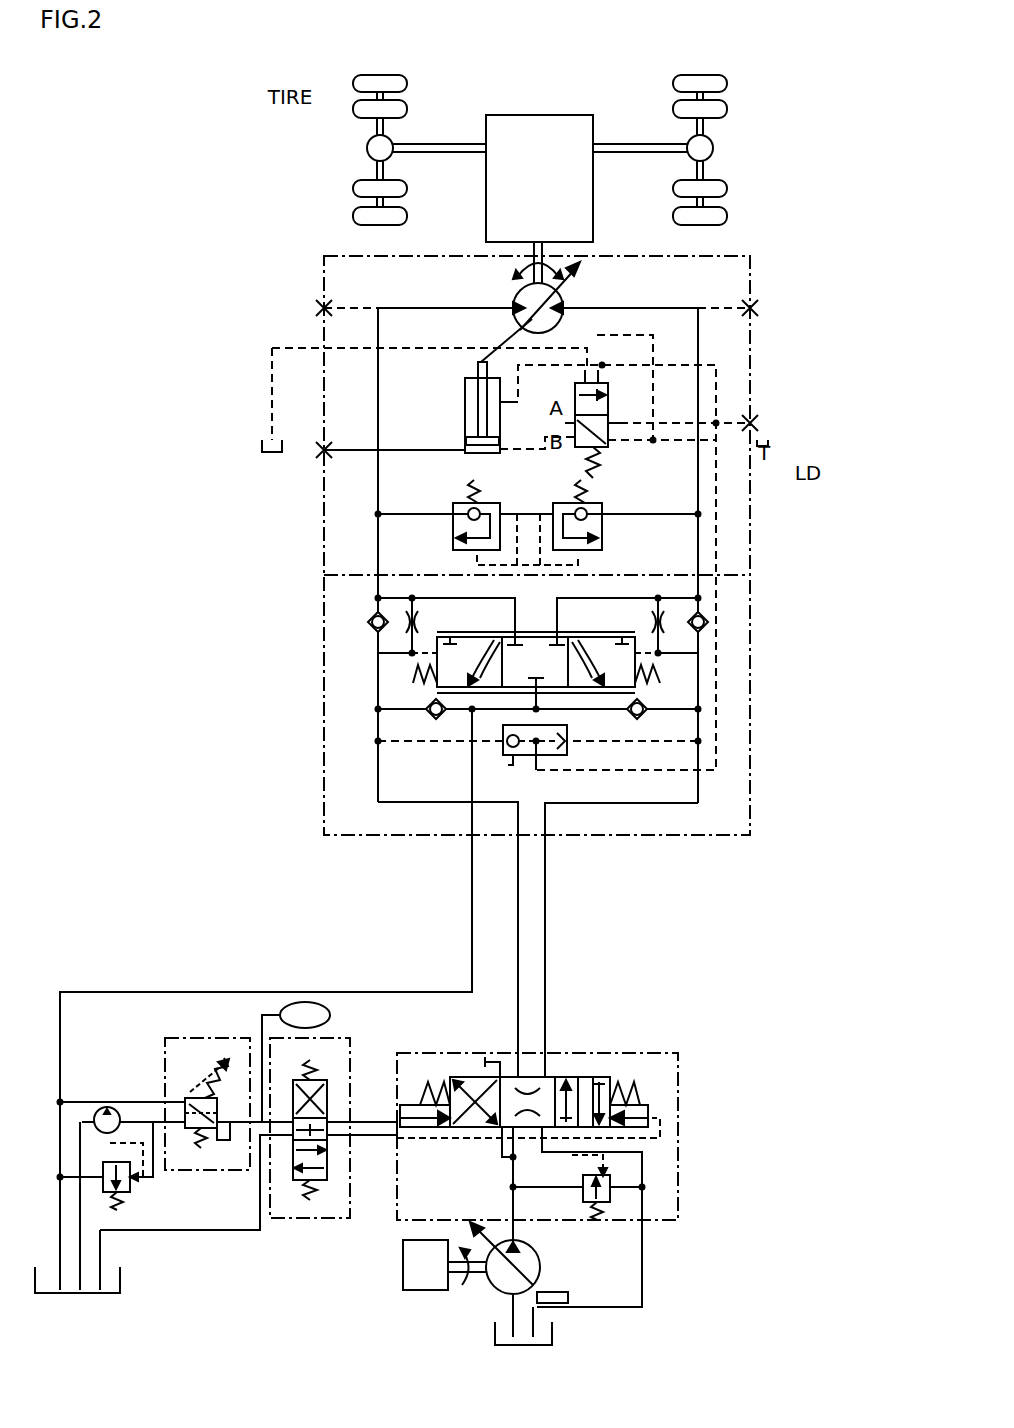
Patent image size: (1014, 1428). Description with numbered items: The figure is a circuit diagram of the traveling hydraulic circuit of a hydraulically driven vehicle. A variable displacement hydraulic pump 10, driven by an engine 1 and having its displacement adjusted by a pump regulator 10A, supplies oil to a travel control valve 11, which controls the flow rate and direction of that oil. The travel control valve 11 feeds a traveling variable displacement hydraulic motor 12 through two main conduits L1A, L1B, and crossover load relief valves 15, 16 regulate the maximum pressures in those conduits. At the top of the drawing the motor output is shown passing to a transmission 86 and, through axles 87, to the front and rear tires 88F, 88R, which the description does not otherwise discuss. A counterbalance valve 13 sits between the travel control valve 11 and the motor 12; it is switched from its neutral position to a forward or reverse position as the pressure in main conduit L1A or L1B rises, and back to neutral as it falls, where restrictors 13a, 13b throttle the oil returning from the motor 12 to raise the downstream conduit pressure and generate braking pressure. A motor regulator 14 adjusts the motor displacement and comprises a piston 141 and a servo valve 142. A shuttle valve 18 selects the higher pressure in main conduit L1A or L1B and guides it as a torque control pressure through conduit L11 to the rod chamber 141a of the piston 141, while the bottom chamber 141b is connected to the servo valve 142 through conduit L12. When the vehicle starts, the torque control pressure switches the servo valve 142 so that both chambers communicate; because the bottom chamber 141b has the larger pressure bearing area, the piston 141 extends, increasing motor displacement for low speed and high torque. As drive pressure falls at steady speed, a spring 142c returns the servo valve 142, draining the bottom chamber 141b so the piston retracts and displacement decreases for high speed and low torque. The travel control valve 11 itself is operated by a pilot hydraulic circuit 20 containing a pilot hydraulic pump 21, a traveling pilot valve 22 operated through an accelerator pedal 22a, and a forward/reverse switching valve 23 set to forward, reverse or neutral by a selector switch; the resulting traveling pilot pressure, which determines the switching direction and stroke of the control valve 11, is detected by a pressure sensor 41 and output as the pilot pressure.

The front tire 88F is at (385, 78).
The rear tire 88R is at (700, 78).
The axle 87 is at (430, 143).
The transmission 86 is at (550, 118).
The hydraulic motor 12 is at (570, 300).
The motor regulator 14 is at (392, 400).
The piston 141 is at (465, 392).
The rod chamber 141a is at (465, 412).
The bottom chamber 141b is at (484, 453).
The servo valve 142 is at (612, 446).
The spring 142c is at (591, 479).
The crossover load relief valve 15 is at (462, 500).
The crossover load relief valve 16 is at (594, 486).
The counterbalance valve 13 is at (637, 688).
The restrictor 13a is at (658, 632).
The restrictor 13b is at (412, 632).
The shuttle valve 18 is at (527, 760).
The conduit L11 is at (704, 360).
The conduit L12 is at (608, 567).
The main conduit L1A is at (372, 765).
The main conduit L1B is at (648, 803).
The pilot hydraulic circuit 20 is at (186, 1031).
The pilot hydraulic pump 21 is at (106, 1107).
The traveling pilot valve 22 is at (190, 1130).
The accelerator pedal 22a is at (210, 1082).
The forward/reverse switching valve 23 is at (290, 1215).
The pressure sensor 41 is at (332, 1015).
The travel control valve 11 is at (584, 1082).
The variable displacement hydraulic pump 10 is at (492, 1286).
The pump regulator 10A is at (568, 1292).
The engine 1 is at (420, 1290).